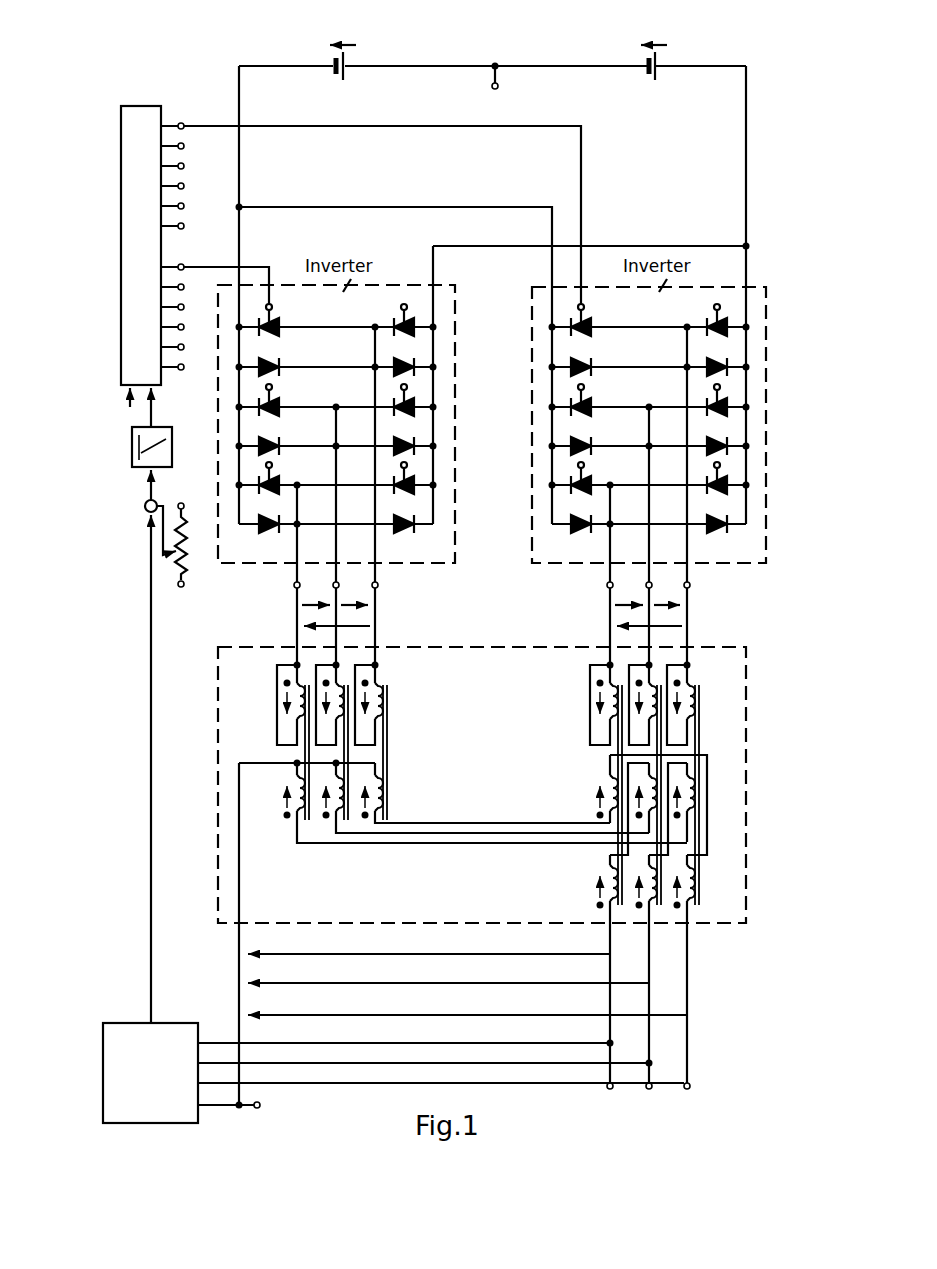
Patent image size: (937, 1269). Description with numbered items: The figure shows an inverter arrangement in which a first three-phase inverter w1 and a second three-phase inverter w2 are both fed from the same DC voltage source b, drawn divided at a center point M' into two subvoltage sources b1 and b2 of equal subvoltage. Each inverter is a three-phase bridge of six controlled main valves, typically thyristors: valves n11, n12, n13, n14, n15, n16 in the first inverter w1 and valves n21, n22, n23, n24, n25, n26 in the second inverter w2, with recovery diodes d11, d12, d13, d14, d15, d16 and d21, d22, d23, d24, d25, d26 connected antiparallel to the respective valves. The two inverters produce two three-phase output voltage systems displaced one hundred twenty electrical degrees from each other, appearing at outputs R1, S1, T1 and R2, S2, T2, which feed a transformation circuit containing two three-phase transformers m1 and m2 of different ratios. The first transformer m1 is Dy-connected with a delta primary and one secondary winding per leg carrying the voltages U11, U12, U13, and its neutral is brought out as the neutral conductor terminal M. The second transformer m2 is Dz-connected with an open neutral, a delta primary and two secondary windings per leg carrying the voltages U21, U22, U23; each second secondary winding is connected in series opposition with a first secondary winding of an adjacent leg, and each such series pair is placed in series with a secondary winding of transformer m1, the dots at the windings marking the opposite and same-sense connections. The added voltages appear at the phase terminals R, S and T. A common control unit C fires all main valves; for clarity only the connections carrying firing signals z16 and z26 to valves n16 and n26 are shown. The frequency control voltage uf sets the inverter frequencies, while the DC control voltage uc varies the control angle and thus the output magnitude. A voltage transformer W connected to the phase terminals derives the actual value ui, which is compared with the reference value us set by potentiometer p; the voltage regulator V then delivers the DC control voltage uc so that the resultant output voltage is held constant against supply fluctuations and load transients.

The common control unit C is at (150, 258).
The firing signal z26 is at (382, 204).
The firing signal z16 is at (226, 275).
The DC voltage source b is at (500, 54).
The subvoltage source b1 is at (345, 70).
The subvoltage source b2 is at (657, 70).
The center point M' is at (493, 90).
The first three-phase inverter w1 is at (454, 314).
The second three-phase inverter w2 is at (532, 368).
The controlled main valve n16 is at (272, 318).
The controlled main valve n15 is at (272, 398).
The controlled main valve n14 is at (272, 476).
The controlled main valve n13 is at (397, 318).
The controlled main valve n12 is at (397, 400).
The controlled main valve n11 is at (397, 480).
The recovery diode d16 is at (274, 360).
The recovery diode d15 is at (274, 439).
The recovery diode d14 is at (264, 532).
The recovery diode d13 is at (398, 360).
The recovery diode d12 is at (398, 441).
The recovery diode d11 is at (400, 532).
The controlled main valve n26 is at (584, 318).
The controlled main valve n25 is at (584, 398).
The controlled main valve n24 is at (584, 476).
The controlled main valve n23 is at (710, 318).
The controlled main valve n22 is at (710, 400).
The controlled main valve n21 is at (710, 480).
The recovery diode d26 is at (586, 360).
The recovery diode d25 is at (586, 439).
The recovery diode d24 is at (576, 532).
The recovery diode d23 is at (711, 360).
The recovery diode d22 is at (711, 441).
The recovery diode d21 is at (713, 532).
The output voltage R1 is at (283, 575).
The output voltage S1 is at (323, 536).
The output voltage T1 is at (362, 496).
The output voltage R2 is at (596, 575).
The output voltage S2 is at (636, 536).
The output voltage T2 is at (674, 496).
The first three-phase transformer m1 is at (375, 752).
The second three-phase transformer m2 is at (625, 748).
The secondary winding voltage U11 is at (286, 790).
The secondary winding voltage U12 is at (315, 812).
The secondary winding voltage U13 is at (377, 790).
The secondary winding voltage U21 is at (597, 793).
The secondary winding voltage U22 is at (626, 799).
The secondary winding voltage U23 is at (690, 796).
The phase terminal R is at (609, 1090).
The phase terminal S is at (648, 1100).
The voltage transformer W is at (166, 1135).
The neutral conductor terminal M is at (258, 1106).
The voltage regulator V is at (112, 460).
The frequency control voltage uf is at (132, 398).
The DC control voltage uc is at (153, 408).
The voltage reference value us is at (153, 482).
The actual voltage value ui is at (151, 534).
The reference value transmitter p is at (186, 572).